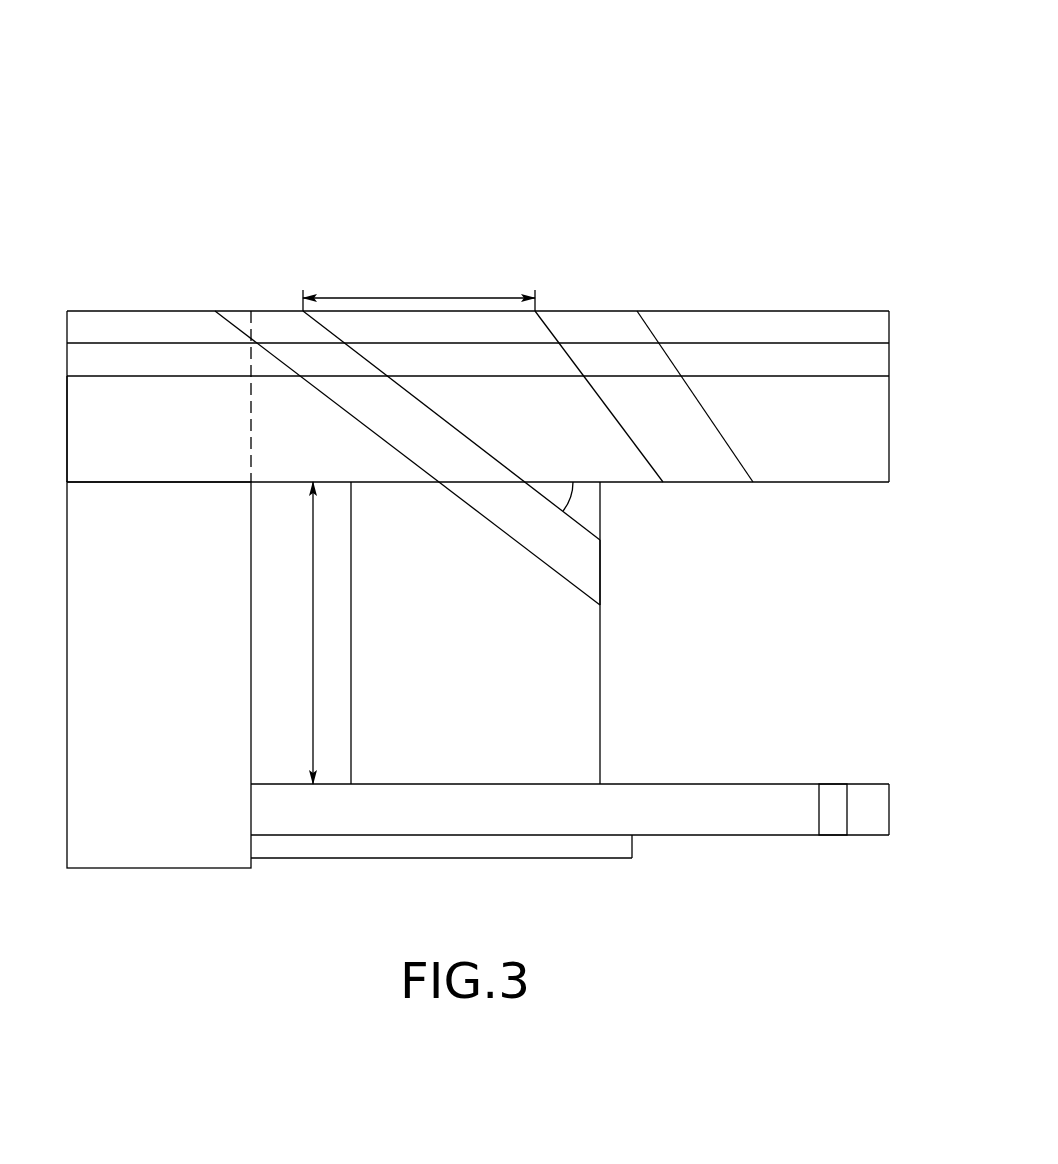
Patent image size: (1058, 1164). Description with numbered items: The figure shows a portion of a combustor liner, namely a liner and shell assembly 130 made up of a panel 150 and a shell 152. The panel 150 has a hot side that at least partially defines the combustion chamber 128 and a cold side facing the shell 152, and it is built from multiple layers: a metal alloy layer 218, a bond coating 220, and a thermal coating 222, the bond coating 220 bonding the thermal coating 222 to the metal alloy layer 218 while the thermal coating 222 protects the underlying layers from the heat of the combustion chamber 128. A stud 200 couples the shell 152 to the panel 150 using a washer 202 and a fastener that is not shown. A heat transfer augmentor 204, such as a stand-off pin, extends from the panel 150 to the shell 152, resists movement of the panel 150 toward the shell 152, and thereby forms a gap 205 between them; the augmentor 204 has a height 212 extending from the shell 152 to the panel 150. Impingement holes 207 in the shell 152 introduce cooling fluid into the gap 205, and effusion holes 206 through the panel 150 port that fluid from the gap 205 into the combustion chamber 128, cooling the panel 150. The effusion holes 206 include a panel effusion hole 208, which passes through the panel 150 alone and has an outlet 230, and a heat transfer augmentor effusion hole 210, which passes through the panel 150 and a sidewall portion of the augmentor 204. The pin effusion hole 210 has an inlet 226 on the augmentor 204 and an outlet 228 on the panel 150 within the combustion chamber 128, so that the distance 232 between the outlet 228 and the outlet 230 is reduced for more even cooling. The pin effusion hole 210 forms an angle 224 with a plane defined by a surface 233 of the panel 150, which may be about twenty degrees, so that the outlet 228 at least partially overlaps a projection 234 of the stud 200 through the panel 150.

The liner and shell assembly 130 is at (640, 124).
The combustion chamber 128 is at (447, 183).
The panel 150 is at (904, 396).
The outlet of the panel effusion hole 230 is at (612, 311).
The surface of the panel 233 is at (800, 483).
The thermal coating 222 is at (829, 342).
The bond coating 220 is at (829, 375).
The metal alloy layer 218 is at (829, 448).
The effusion holes 206 is at (702, 397).
The panel effusion hole 208 is at (562, 355).
The projection of the stud 234 is at (251, 417).
The distance 232 is at (428, 300).
The outlet of the pin effusion hole 228 is at (232, 311).
The heat transfer augmentor effusion hole 210 is at (425, 400).
The angle 224 is at (600, 500).
The inlet of the pin effusion hole 226 is at (600, 548).
The heat transfer augmentor 204 is at (603, 718).
The gap 205 is at (837, 641).
The height 212 is at (313, 625).
The stud 200 is at (150, 773).
The shell 152 is at (890, 808).
The impingement hole 207 is at (836, 790).
The washer 202 is at (628, 852).